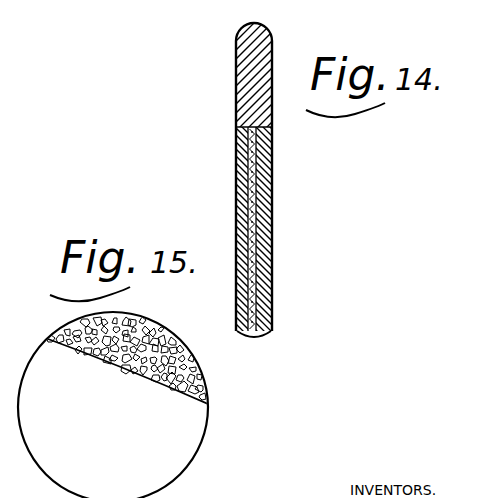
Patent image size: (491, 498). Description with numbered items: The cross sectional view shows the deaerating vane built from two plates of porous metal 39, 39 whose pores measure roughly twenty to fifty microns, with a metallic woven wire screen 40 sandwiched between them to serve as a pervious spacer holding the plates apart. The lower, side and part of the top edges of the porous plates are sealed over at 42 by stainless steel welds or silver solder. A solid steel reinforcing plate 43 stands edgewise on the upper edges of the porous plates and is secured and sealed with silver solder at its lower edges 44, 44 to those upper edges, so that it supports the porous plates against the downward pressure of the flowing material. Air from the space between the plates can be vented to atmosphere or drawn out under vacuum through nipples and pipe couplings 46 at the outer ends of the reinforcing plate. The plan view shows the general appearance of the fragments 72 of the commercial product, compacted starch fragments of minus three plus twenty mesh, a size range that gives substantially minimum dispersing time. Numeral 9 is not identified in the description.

In FIG. 14, the plate of porous metal 39 is at (242, 182).
In FIG. 14, the metallic woven wire screen 40 is at (253, 253).
In FIG. 14, the sealed edges 42 is at (255, 338).
In FIG. 14, the solid steel reinforcing plate 43 is at (238, 91).
In FIG. 14, the lower edges of reinforcing plate 44 is at (246, 127).
In FIG. 15, the fragments 72 is at (208, 388).
In FIG. 15, the pipe coupling 46 is at (11, 54).
In FIG. 15, the partial numeral 9 is at (5, 320).